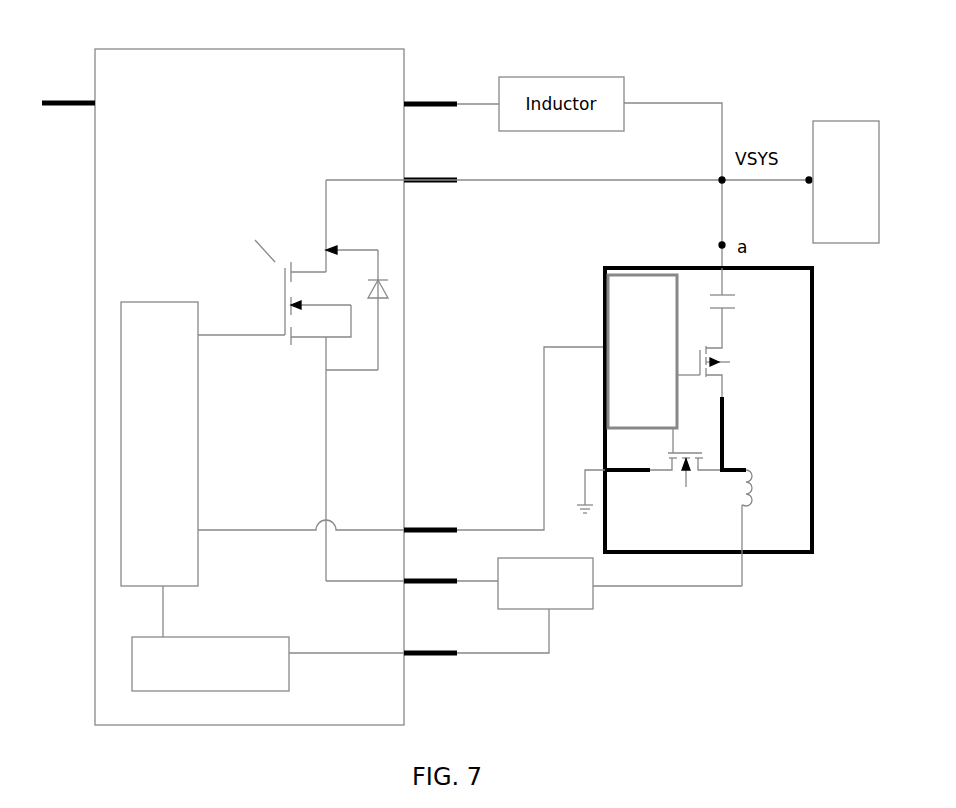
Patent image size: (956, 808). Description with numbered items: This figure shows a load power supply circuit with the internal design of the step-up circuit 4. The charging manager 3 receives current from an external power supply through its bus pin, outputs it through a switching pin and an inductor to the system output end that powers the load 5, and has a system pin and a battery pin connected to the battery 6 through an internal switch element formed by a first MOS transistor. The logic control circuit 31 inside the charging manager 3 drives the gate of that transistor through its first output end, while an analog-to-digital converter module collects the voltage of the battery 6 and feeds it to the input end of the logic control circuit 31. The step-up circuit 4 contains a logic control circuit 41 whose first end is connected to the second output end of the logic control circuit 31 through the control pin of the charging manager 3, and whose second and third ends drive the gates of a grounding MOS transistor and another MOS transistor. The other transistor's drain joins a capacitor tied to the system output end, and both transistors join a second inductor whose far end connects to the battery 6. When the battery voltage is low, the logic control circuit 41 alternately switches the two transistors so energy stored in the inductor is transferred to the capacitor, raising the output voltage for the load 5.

The charging manager 3 is at (320, 49).
The logic control circuit 31 is at (166, 302).
The step-up circuit 4 is at (812, 470).
The logic control circuit 41 is at (603, 320).
The load 5 is at (847, 120).
The battery 6 is at (575, 613).